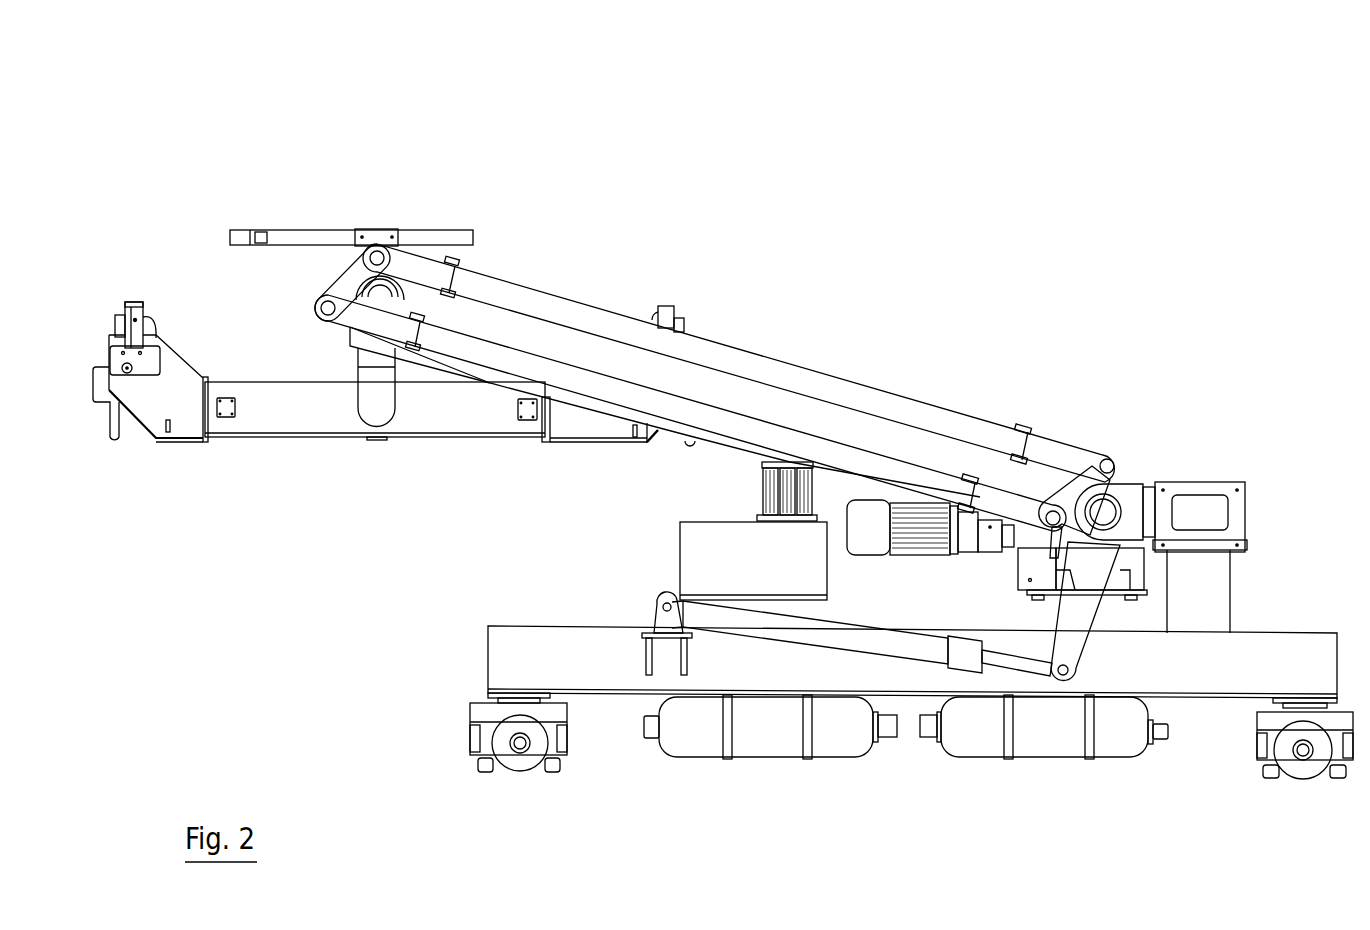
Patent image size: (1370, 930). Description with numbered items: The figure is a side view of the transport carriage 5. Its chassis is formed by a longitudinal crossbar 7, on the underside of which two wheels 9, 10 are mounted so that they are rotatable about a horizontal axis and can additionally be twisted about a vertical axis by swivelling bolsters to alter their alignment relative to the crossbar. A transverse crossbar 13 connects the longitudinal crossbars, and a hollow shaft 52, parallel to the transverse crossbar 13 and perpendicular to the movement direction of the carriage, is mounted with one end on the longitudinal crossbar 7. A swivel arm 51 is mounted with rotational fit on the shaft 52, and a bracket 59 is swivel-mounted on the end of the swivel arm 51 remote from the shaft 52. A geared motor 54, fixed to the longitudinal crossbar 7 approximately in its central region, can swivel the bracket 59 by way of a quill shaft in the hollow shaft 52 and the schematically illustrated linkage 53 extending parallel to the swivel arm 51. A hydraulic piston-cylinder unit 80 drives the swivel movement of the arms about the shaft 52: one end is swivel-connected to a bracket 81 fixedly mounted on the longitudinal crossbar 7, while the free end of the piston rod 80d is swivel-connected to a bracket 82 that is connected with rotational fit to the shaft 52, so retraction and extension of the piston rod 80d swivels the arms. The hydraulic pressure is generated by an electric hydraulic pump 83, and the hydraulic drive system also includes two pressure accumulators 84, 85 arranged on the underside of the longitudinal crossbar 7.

The transport carriage 5 is at (1138, 146).
The longitudinal crossbar 7 is at (555, 658).
The wheel 9 is at (1313, 763).
The wheel 10 is at (527, 748).
The transverse crossbar 13 is at (1207, 510).
The swivel arm 51 is at (623, 410).
The shaft 52 is at (1103, 468).
The linkage 53 is at (793, 377).
The geared motor 54 is at (918, 526).
The bracket 59 is at (378, 393).
The hydraulic piston-cylinder unit 80 is at (783, 625).
The piston rod 80d is at (985, 655).
The bracket 81 is at (652, 616).
The bracket 82 is at (1068, 640).
The electric hydraulic pump 83 is at (772, 492).
The pressure accumulator 84 is at (698, 733).
The pressure accumulator 85 is at (1060, 733).